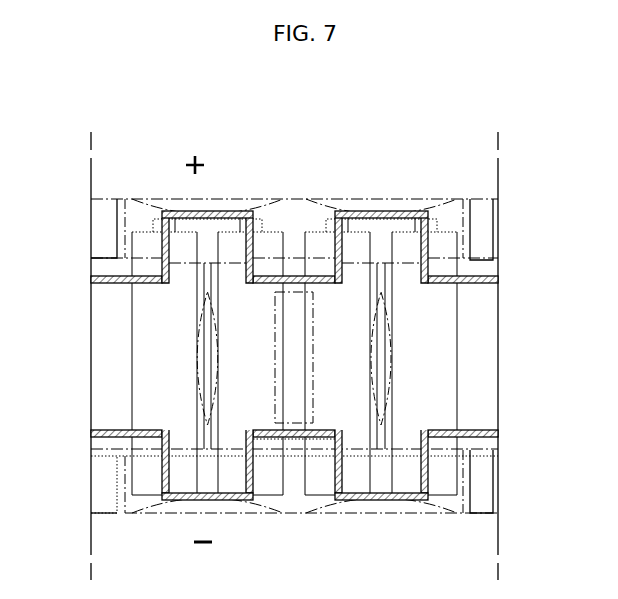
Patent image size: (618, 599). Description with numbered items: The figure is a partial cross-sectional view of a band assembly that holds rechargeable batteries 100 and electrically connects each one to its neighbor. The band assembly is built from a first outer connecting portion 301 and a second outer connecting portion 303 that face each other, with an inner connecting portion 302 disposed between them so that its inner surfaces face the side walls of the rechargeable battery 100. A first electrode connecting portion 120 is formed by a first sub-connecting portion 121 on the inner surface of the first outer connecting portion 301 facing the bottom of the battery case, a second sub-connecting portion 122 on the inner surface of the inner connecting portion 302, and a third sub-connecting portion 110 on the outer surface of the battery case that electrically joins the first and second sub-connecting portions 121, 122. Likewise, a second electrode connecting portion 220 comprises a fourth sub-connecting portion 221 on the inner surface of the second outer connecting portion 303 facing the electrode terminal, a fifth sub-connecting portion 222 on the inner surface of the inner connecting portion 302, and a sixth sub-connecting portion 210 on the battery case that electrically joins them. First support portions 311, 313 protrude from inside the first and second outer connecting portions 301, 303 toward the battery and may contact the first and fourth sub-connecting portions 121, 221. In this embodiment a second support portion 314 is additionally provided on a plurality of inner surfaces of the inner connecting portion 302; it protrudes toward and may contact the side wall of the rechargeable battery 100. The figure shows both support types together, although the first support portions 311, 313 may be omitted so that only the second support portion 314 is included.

The rechargeable battery 100 is at (137, 308).
The third sub-connecting portion 110 is at (253, 470).
The first electrode connecting portion 120 is at (342, 494).
The first sub-connecting portion 121 is at (430, 498).
The second sub-connecting portion 122 is at (498, 432).
The sixth sub-connecting portion 210 is at (252, 248).
The second electrode connecting portion 220 is at (342, 220).
The fourth sub-connecting portion 221 is at (450, 203).
The fifth sub-connecting portion 222 is at (497, 278).
The first outer connecting portion 301 is at (100, 483).
The inner connecting portion 302 is at (487, 355).
The second outer connecting portion 303 is at (100, 230).
The first support portion 311 is at (389, 507).
The first support portion 313 is at (382, 207).
The second support portion 314 is at (200, 377).